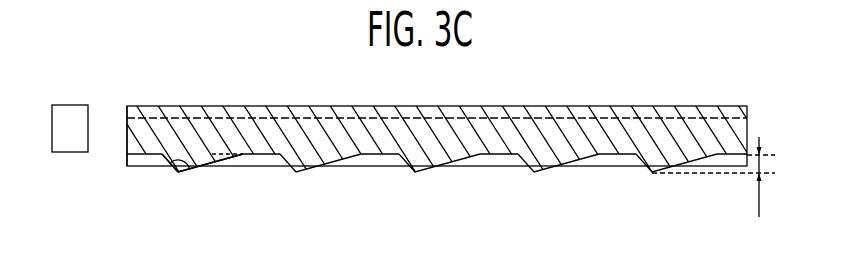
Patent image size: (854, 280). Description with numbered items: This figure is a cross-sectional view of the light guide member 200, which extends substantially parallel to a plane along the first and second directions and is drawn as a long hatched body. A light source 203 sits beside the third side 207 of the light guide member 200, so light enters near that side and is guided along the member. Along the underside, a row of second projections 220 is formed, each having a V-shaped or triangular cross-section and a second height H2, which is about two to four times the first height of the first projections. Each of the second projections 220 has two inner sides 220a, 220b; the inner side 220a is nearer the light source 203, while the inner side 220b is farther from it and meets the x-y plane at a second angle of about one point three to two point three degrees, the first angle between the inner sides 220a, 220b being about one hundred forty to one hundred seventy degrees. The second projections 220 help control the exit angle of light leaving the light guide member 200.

The light guide member 200 is at (737, 127).
The light source 203 is at (73, 152).
The third side 207 is at (127, 126).
The second projections 220 is at (649, 173).
The inner side 220a is at (239, 157).
The inner side 220b is at (169, 164).
The second height H2 is at (719, 177).